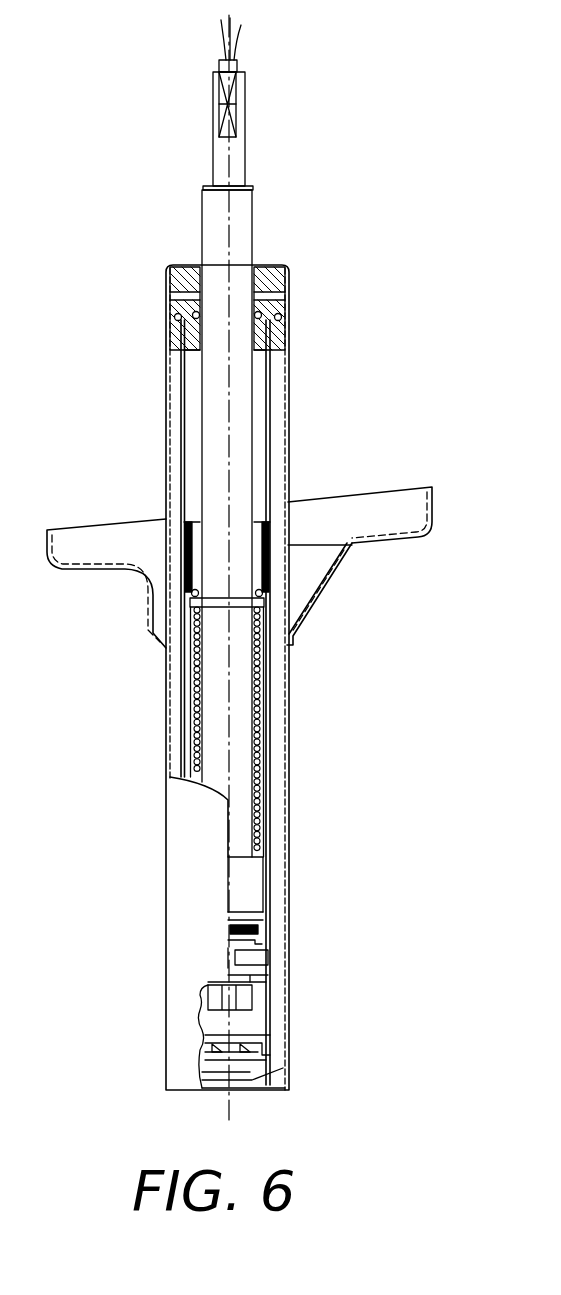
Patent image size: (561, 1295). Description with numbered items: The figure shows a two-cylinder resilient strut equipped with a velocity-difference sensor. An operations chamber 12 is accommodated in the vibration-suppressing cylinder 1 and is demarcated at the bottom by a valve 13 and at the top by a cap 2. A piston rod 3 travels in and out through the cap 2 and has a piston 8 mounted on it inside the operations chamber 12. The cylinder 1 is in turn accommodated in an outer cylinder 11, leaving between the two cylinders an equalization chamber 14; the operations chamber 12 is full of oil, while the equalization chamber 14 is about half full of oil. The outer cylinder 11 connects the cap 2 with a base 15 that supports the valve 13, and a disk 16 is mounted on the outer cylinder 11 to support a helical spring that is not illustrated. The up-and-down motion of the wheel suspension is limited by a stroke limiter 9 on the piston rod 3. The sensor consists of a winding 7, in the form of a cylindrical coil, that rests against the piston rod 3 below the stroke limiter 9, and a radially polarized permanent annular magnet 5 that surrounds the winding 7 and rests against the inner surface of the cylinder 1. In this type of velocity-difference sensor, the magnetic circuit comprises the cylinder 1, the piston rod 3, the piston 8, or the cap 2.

The vibration-suppressing cylinder 1 is at (272, 420).
The cap 2 is at (290, 295).
The piston rod 3 is at (258, 482).
The radially polarized permanent annular magnet 5 is at (180, 560).
The winding 7 is at (262, 782).
The piston 8 is at (250, 962).
The stroke limiter 9 is at (272, 598).
The outer cylinder 11 is at (287, 703).
The operations chamber 12 is at (258, 378).
The valve 13 is at (270, 1045).
The equalization chamber 14 is at (272, 850).
The base 15 is at (280, 1085).
The disk 16 is at (434, 507).